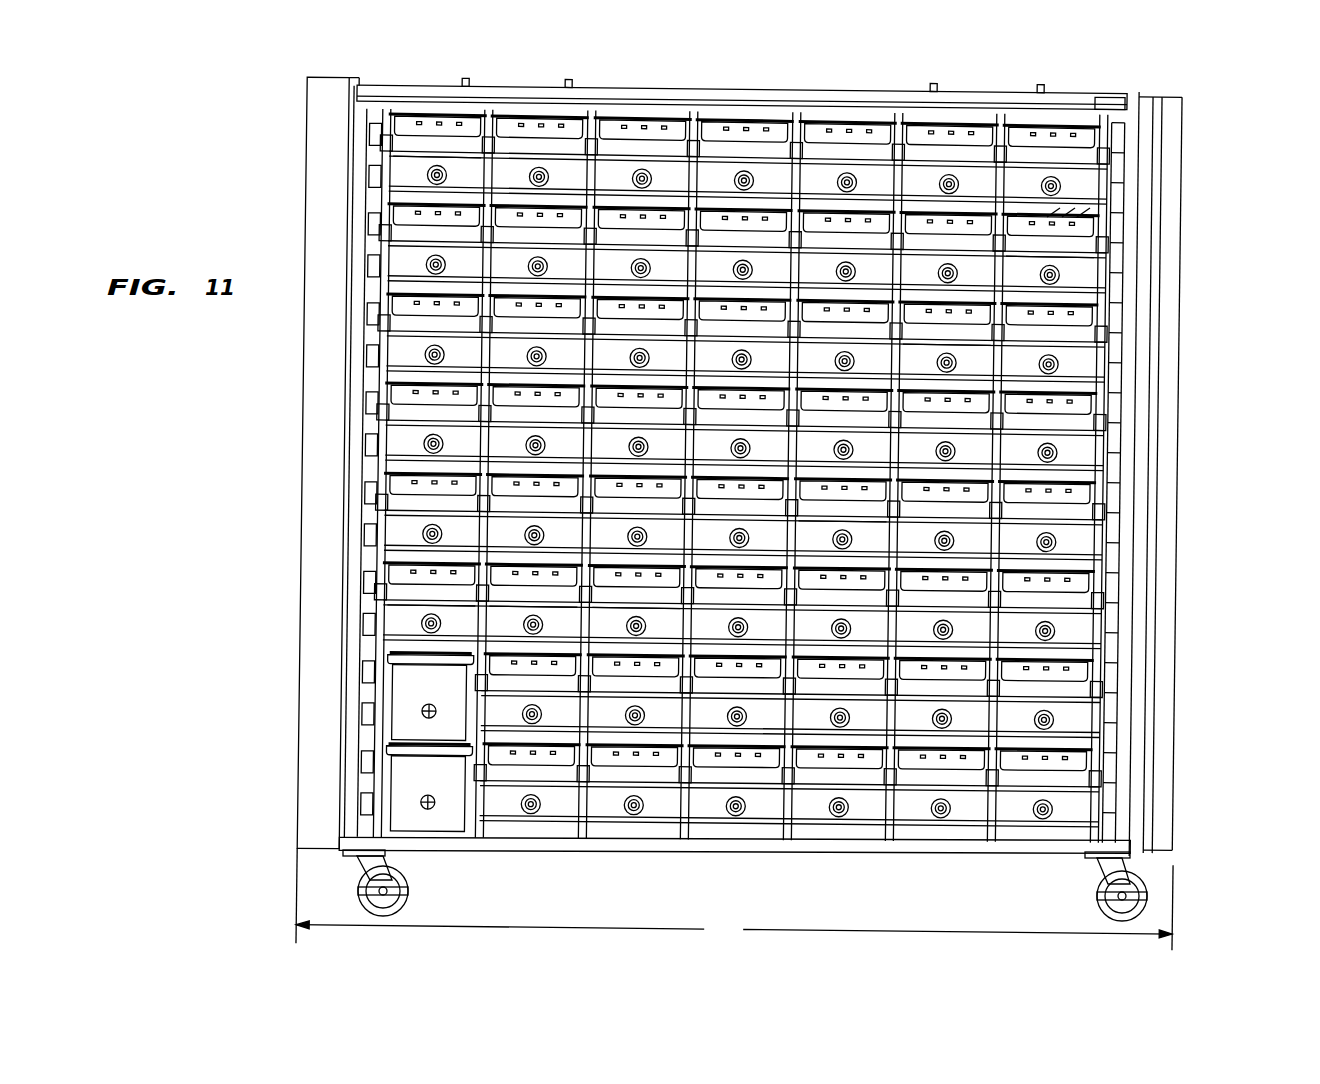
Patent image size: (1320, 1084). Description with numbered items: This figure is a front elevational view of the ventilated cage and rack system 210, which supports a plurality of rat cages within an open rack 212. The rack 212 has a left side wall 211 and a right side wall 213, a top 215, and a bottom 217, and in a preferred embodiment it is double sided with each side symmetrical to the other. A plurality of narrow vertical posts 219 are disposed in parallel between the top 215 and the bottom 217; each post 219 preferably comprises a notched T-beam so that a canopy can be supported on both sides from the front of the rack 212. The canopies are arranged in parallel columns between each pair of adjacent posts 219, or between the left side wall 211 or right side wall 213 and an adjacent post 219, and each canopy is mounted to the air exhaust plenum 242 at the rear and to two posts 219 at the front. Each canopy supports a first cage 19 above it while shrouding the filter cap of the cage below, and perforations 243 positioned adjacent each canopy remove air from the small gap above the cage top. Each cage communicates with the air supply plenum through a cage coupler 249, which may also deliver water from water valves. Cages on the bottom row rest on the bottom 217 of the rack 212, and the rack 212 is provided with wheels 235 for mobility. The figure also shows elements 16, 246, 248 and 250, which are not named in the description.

The ventilated cage and rack system 210 is at (290, 470).
The left side wall 211 is at (350, 657).
The rack 212 is at (1192, 403).
The right side wall 213 is at (1128, 545).
The top 215 is at (852, 114).
The bottom 217 is at (944, 852).
The posts 219 is at (486, 830).
The wheels 235 is at (362, 906).
The air exhaust plenum 242 is at (392, 118).
The perforations 243 is at (458, 116).
The side wall 246 is at (1170, 440).
The drawer front 248 is at (403, 178).
The cage coupler 249 is at (430, 168).
The left side panel 250 is at (342, 408).
The bin 16 is at (443, 824).
The first cage 19 is at (410, 733).